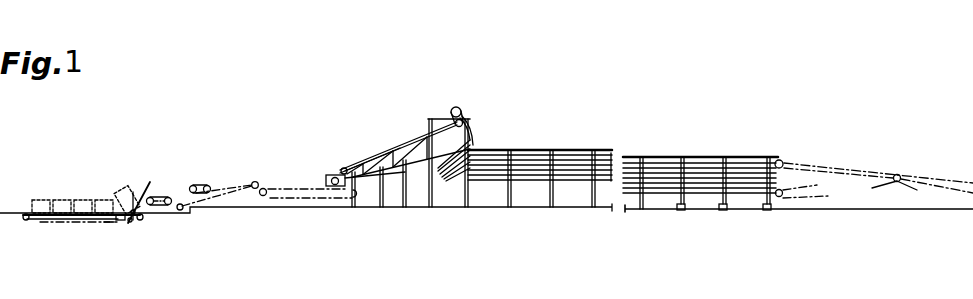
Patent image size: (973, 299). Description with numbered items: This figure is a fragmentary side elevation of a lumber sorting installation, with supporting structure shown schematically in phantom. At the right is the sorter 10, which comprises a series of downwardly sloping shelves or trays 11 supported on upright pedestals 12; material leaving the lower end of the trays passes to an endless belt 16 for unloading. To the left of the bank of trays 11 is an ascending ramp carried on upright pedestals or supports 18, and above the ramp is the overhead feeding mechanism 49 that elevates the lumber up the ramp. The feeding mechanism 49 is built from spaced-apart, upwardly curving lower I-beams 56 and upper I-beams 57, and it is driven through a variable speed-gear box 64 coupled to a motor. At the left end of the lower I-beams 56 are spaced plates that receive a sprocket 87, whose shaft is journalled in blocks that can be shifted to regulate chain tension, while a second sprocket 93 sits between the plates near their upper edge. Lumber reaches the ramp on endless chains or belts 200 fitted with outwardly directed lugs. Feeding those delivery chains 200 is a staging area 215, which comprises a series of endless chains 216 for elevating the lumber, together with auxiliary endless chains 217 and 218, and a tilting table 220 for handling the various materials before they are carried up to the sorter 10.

The sorter 10 is at (817, 161).
The shelves or trays 11 is at (575, 150).
The upright pedestals 12 is at (511, 198).
The endless belt 16 is at (928, 174).
The upright pedestals or supports 18 is at (354, 199).
The feeding mechanism 49 is at (404, 143).
The lower I-beams 56 is at (389, 177).
The upper I-beams 57 is at (369, 161).
The variable speed-gear box 64 is at (462, 112).
The sprocket 87 is at (331, 177).
The sprocket 93 is at (343, 168).
The endless chains or belts 200 is at (280, 194).
The staging area 215 is at (223, 186).
The endless chains 216 is at (245, 182).
The auxiliary endless chain 217 is at (199, 184).
The auxiliary endless chain 218 is at (163, 196).
The tilting table 220 is at (141, 200).